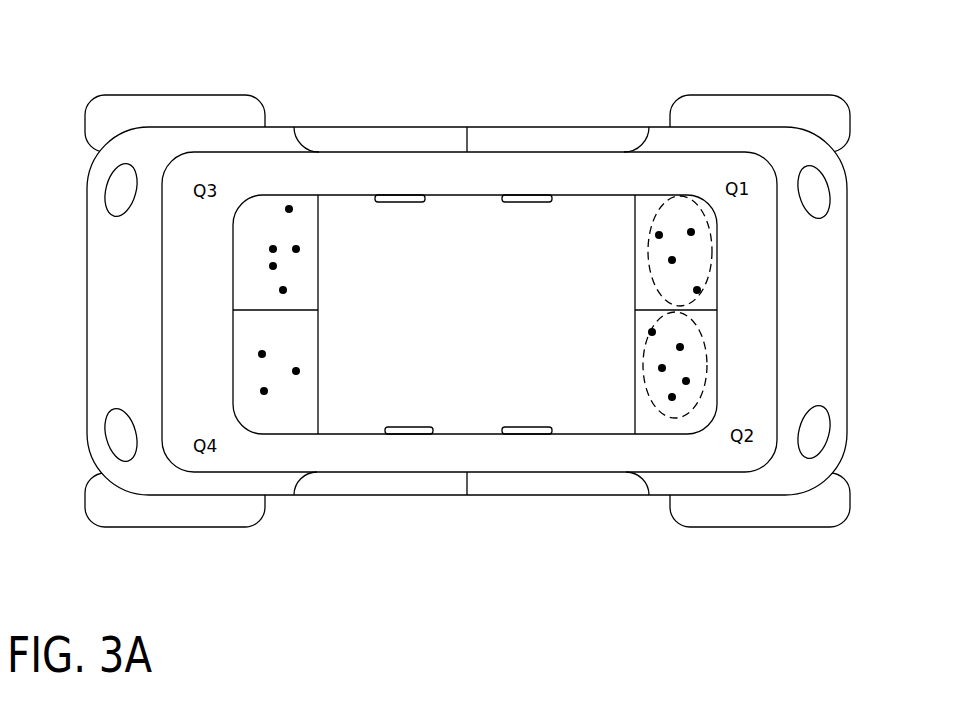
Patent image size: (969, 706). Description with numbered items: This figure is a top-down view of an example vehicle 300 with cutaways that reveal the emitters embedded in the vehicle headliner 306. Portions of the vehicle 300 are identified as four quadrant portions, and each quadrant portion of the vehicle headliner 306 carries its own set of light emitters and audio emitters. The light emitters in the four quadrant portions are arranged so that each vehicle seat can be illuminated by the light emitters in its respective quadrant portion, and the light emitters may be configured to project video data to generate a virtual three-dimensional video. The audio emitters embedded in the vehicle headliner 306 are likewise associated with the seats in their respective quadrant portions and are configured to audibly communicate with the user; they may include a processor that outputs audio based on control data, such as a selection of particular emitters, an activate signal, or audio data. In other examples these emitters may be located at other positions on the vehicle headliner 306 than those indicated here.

The vehicle 300 is at (148, 147).
The vehicle headliner 306 is at (377, 250).